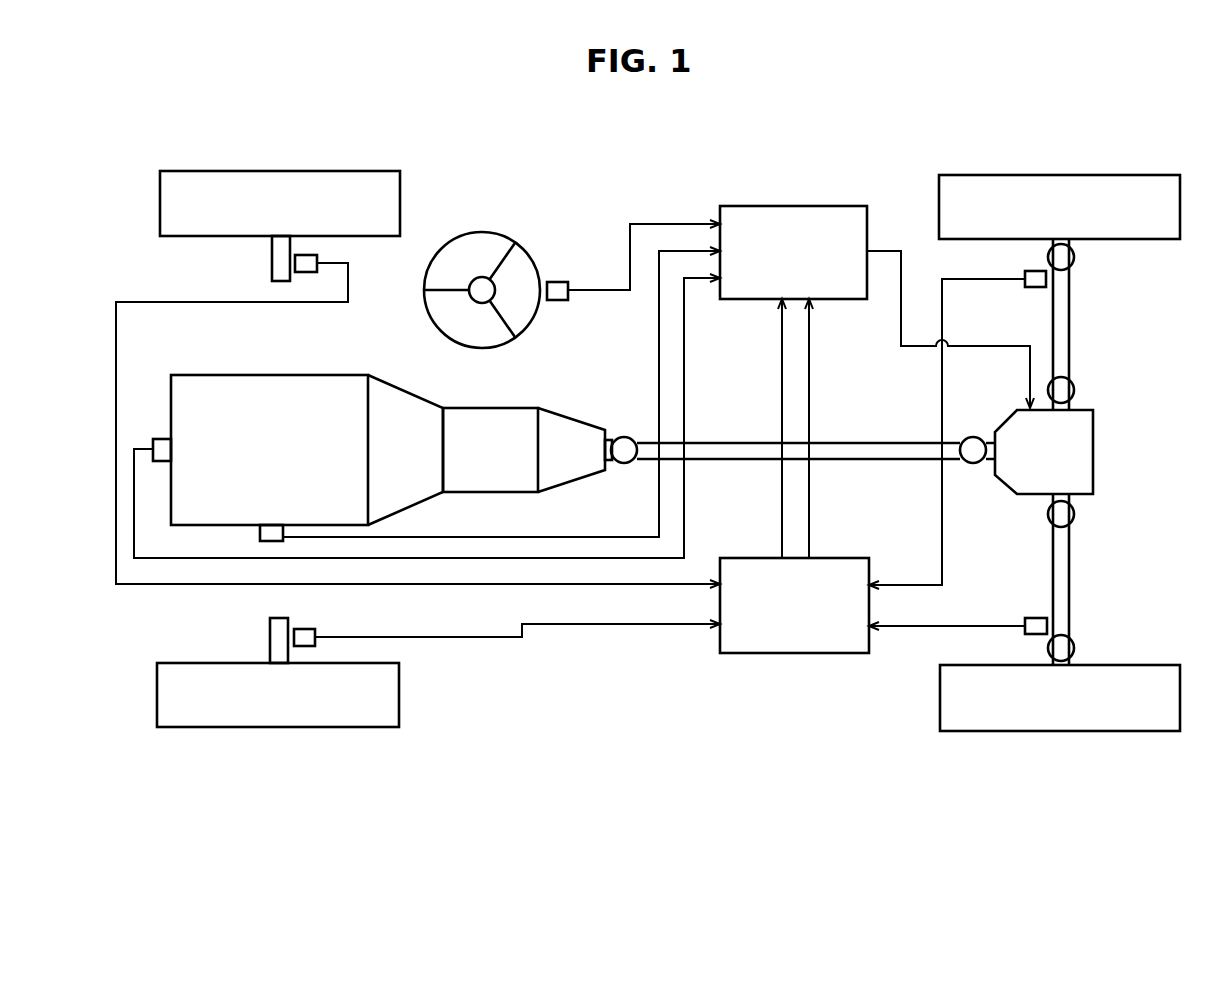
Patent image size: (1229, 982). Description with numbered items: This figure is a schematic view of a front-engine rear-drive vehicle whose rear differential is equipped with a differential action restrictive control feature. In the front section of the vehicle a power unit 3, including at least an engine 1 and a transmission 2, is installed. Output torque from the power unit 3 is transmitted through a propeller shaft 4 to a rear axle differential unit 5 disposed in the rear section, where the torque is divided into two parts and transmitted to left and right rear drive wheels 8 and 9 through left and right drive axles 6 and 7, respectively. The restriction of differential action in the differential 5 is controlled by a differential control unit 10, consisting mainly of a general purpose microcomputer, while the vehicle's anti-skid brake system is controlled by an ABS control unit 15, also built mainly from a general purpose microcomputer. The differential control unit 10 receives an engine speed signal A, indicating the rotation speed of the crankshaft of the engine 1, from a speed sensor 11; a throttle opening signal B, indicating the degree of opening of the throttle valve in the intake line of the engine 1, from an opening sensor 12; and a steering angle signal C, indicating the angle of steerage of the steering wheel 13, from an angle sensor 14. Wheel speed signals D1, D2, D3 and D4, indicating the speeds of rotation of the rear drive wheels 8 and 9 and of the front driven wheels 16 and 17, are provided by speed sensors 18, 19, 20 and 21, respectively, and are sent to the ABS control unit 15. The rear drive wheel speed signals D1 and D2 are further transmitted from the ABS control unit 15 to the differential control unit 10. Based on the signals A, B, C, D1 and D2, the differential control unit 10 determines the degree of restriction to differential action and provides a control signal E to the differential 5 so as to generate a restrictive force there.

The engine 1 is at (316, 375).
The transmission 2 is at (470, 408).
The power unit 3 is at (539, 401).
The propeller shaft 4 is at (855, 443).
The rear axle differential unit 5 is at (1094, 446).
The left drive axle 6 is at (1072, 585).
The right drive axle 7 is at (1071, 338).
The left rear drive wheel 8 is at (1124, 665).
The right rear drive wheel 9 is at (1124, 239).
The differential control unit 10 is at (822, 206).
The speed sensor 11 is at (163, 438).
The opening sensor 12 is at (258, 537).
The steering wheel 13 is at (505, 236).
The angle sensor 14 is at (562, 282).
The ABS control unit 15 is at (845, 558).
The front driven wheel 16 is at (208, 663).
The front driven wheel 17 is at (228, 236).
The speed sensor 18 is at (1027, 618).
The speed sensor 19 is at (1030, 289).
The speed sensor 20 is at (312, 630).
The speed sensor 21 is at (318, 262).
The engine speed signal A is at (690, 398).
The throttle opening signal B is at (658, 365).
The steering angle signal C is at (666, 222).
The wheel speed signal D1 is at (780, 530).
The wheel speed signal D2 is at (810, 528).
The wheel speed signal D3 is at (493, 637).
The wheel speed signal D4 is at (455, 584).
The control signal E is at (900, 304).